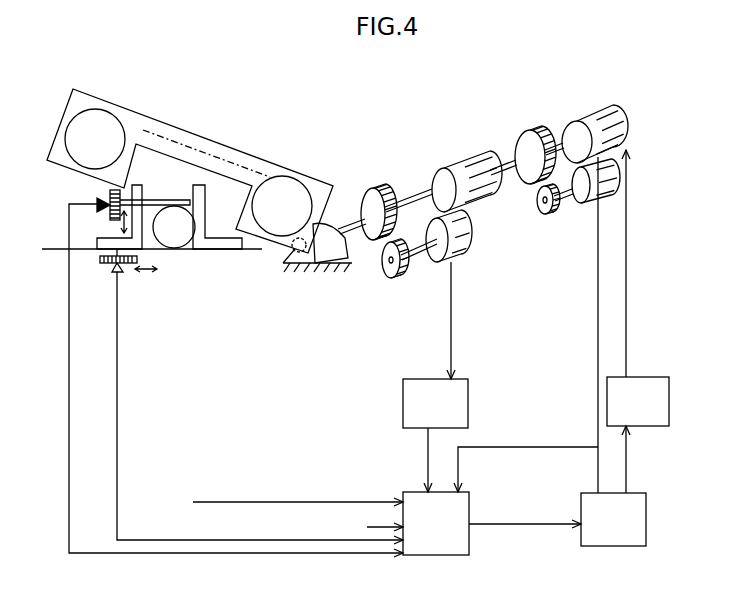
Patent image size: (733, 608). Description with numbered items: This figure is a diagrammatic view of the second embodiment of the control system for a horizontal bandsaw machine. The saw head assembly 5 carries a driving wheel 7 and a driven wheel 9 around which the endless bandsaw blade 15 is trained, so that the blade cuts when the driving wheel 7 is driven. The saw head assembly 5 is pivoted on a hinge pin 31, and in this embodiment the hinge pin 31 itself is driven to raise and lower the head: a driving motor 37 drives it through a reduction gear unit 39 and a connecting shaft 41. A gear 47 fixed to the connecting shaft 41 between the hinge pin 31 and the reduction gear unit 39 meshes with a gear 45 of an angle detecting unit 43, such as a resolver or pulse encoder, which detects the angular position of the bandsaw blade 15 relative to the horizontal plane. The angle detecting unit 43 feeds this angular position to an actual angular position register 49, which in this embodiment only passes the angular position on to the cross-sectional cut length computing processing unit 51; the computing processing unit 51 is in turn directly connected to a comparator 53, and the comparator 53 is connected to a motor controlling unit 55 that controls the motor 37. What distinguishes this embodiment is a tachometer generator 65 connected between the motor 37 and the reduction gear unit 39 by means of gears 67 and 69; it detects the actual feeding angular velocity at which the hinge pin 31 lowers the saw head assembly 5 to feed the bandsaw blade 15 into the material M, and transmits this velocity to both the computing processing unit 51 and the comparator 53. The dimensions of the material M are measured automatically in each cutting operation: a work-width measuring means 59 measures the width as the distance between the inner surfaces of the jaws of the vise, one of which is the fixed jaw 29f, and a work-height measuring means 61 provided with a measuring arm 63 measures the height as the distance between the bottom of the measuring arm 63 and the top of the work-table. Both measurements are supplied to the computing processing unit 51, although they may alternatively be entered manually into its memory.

The saw head assembly 5 is at (213, 139).
The driving wheel 7 is at (305, 187).
The driven wheel 9 is at (70, 128).
The bandsaw blade 15 is at (143, 128).
The fixed jaw 29f is at (203, 186).
The hinge pin 31 is at (301, 257).
The driving motor 37 is at (590, 123).
The reduction gear unit 39 is at (460, 173).
The connecting shaft 41 is at (407, 201).
The angle detecting unit 43 is at (468, 256).
The gear 45 is at (393, 277).
The gear 47 is at (368, 203).
The actual angular position register 49 is at (435, 435).
The cross-sectional cut length computing processing unit 51 is at (395, 501).
The comparator 53 is at (613, 351).
The motor controlling unit 55 is at (638, 288).
The work-width measuring means 59 is at (129, 276).
The work-height measuring means 61 is at (93, 190).
The measuring arm 63 is at (163, 198).
The tachometer generator 65 is at (612, 190).
The gear 67 is at (548, 215).
The gear 69 is at (530, 142).
The material M is at (177, 238).